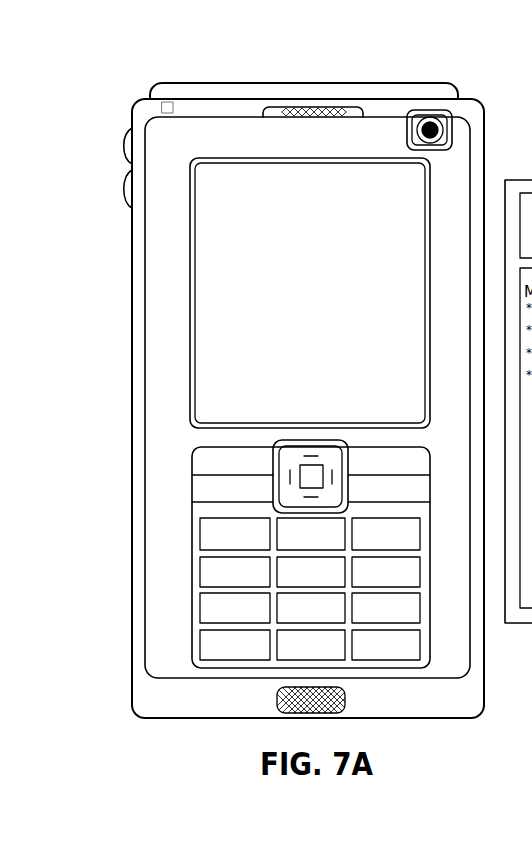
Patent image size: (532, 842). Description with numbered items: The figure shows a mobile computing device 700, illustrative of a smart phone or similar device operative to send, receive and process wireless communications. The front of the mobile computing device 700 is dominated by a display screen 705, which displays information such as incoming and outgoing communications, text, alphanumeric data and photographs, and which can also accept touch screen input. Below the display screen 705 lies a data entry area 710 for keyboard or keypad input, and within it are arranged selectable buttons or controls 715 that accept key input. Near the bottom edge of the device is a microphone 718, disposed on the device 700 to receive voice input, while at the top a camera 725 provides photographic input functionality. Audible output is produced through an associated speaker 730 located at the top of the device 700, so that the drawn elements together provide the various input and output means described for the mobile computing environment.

The mobile computing device 700 is at (131, 105).
The display screen 705 is at (222, 281).
The data entry area 710 is at (192, 484).
The selectable buttons or controls 715 is at (212, 570).
The microphone 718 is at (278, 697).
The camera 725 is at (434, 126).
The speaker 730 is at (320, 108).